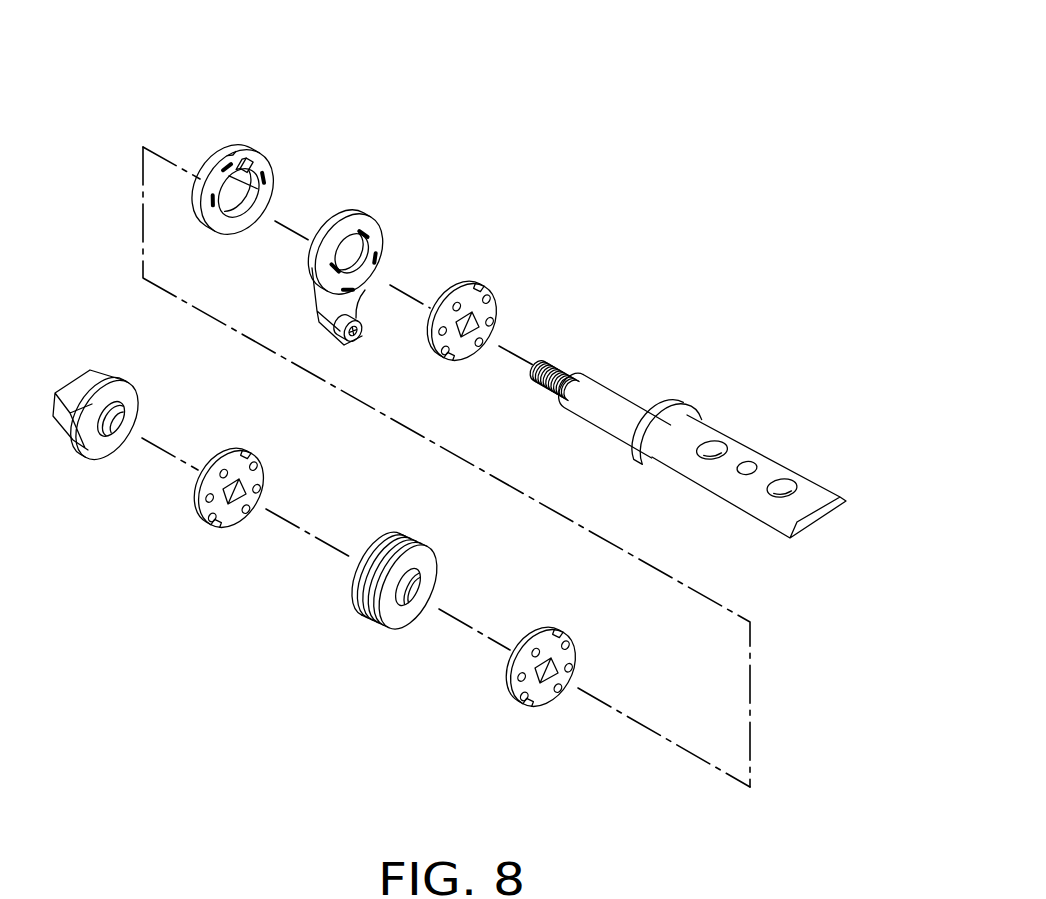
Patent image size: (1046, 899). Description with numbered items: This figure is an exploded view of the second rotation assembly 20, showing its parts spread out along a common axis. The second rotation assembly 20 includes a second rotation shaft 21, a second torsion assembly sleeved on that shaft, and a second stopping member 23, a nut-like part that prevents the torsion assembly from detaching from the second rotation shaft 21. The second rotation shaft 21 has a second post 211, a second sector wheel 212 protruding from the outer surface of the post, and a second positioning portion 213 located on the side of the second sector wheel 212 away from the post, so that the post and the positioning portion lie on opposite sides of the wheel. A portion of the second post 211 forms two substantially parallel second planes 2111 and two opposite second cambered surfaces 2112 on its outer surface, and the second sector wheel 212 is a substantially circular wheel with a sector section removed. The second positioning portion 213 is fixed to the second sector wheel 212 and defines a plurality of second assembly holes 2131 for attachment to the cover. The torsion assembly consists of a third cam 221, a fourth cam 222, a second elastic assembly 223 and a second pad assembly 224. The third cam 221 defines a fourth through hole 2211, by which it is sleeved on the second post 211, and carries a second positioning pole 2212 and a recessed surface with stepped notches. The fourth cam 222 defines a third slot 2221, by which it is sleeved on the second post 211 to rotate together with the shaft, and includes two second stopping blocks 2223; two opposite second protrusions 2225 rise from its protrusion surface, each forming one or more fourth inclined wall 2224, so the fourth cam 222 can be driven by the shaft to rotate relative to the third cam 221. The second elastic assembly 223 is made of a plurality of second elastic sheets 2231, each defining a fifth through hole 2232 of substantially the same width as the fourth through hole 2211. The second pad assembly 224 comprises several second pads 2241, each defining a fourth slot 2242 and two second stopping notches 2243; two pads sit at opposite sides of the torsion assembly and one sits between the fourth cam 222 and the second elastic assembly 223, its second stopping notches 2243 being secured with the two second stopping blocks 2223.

The second rotation assembly 20 is at (540, 80).
The second rotation shaft 21 is at (710, 502).
The second post 211 is at (547, 358).
The second planes 2111 is at (620, 397).
The second cambered surfaces 2112 is at (608, 412).
The second sector wheel 212 is at (679, 407).
The second positioning portion 213 is at (810, 493).
The second assembly holes 2131 is at (773, 487).
The third cam 221 is at (313, 293).
The fourth through hole 2211 is at (366, 248).
The second positioning pole 2212 is at (342, 335).
The fourth cam 222 is at (274, 193).
The third slot 2221 is at (242, 205).
The second stopping blocks 2223 is at (232, 150).
The fourth inclined wall 2224 is at (295, 165).
The second protrusions 2225 is at (250, 158).
The second elastic assembly 223 is at (368, 623).
The second elastic sheets 2231 is at (407, 560).
The fifth through hole 2232 is at (421, 582).
The second pad assembly 224 is at (568, 635).
The second pads 2241 is at (464, 357).
The fourth slot 2242 is at (494, 307).
The second stopping notches 2243 is at (467, 288).
The second stopping member 23 is at (124, 397).